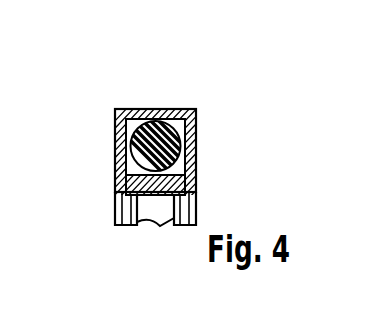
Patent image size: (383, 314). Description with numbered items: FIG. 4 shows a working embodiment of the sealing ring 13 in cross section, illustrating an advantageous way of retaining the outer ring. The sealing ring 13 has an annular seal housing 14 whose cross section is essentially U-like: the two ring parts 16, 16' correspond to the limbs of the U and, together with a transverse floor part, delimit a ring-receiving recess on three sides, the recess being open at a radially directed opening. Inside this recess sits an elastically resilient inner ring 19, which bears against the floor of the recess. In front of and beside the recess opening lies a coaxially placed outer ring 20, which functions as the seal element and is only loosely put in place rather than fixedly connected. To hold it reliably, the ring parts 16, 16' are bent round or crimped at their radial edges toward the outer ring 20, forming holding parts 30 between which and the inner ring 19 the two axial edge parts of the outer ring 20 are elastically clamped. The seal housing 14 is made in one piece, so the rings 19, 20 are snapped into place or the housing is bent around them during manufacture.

The sealing ring 13 is at (110, 107).
The seal housing 14 is at (197, 118).
The ring part 16 is at (162, 152).
The ring part 16' is at (227, 147).
The inner ring 19 is at (162, 118).
The outer ring 20 is at (158, 210).
The holding parts 30 is at (115, 191).